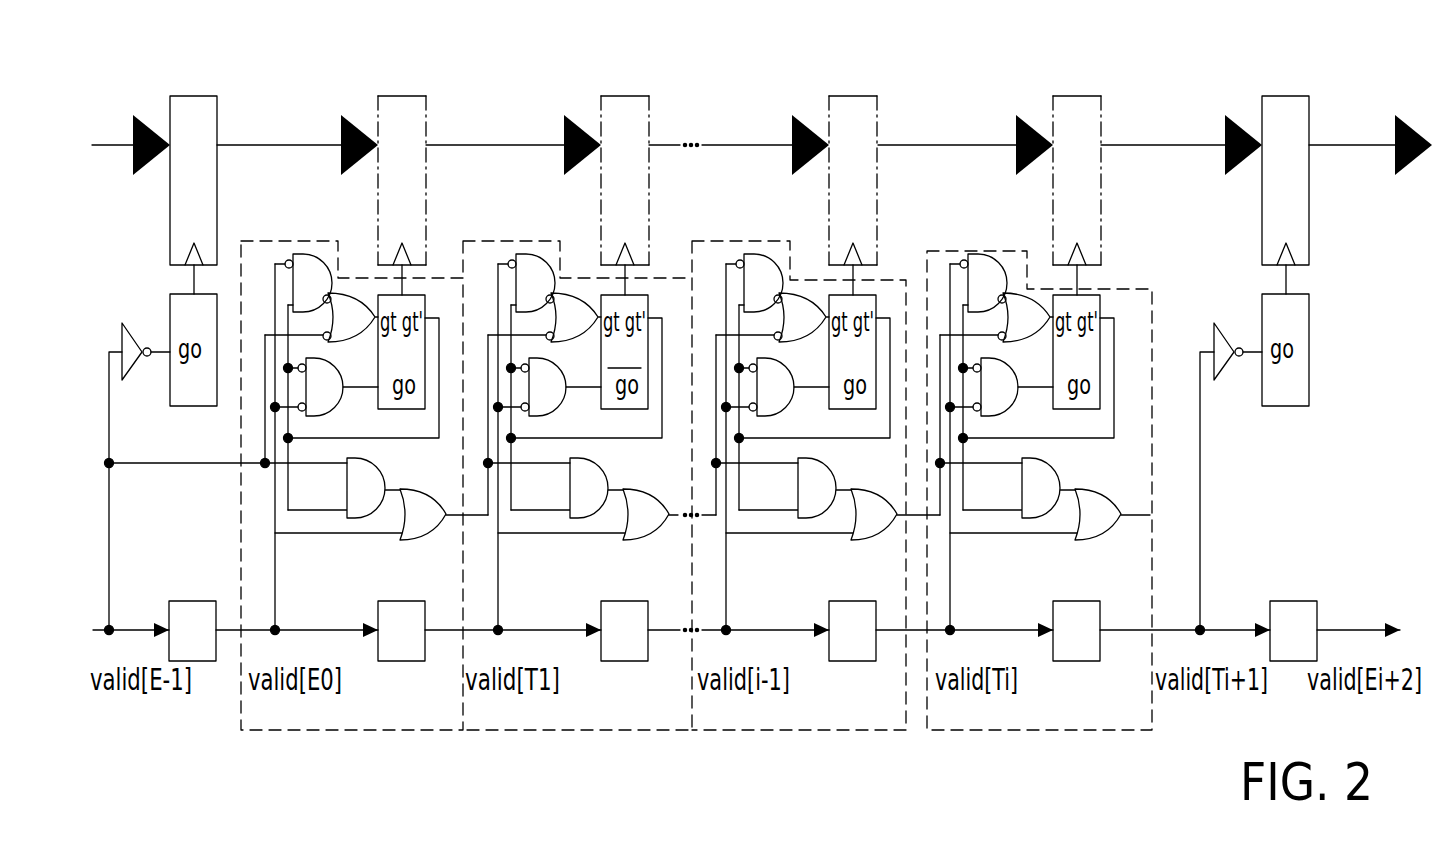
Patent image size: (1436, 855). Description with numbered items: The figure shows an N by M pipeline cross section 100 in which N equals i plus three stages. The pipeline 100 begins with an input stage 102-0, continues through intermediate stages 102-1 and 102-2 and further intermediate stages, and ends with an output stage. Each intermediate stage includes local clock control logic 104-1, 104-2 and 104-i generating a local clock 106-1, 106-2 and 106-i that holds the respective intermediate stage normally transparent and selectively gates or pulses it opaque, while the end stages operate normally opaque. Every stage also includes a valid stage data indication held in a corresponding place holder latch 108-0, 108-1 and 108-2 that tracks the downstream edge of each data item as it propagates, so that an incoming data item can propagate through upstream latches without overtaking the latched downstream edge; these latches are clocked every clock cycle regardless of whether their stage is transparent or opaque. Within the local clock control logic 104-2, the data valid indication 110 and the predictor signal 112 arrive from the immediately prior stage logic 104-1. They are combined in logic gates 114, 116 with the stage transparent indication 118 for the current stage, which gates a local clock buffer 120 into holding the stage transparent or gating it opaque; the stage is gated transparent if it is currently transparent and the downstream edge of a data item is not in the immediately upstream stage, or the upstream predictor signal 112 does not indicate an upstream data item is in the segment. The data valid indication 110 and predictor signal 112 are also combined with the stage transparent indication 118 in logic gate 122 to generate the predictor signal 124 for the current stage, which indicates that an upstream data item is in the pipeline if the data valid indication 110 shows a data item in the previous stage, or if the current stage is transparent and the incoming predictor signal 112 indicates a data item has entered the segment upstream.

The pipeline cross section 100 is at (150, 762).
The input stage 102-0 is at (187, 95).
The intermediate stage 102-1 is at (393, 95).
The intermediate stage 102-2 is at (616, 95).
The local clock control logic 104-1 is at (332, 730).
The local clock control logic 104-2 is at (557, 730).
The local clock control logic 104-i is at (812, 734).
The local clock 106-1 is at (402, 276).
The local clock 106-2 is at (625, 276).
The local clock 106-i is at (853, 276).
The place holder latch 108-0 is at (192, 600).
The place holder latch 108-1 is at (396, 600).
The place holder latch 108-2 is at (622, 600).
The data valid indication 110 is at (498, 582).
The predictor signal 112 is at (453, 507).
The logic gate 114 is at (542, 417).
The logic gate 116 is at (555, 252).
The stage transparent indication 118 is at (650, 436).
The local clock buffer 120 is at (624, 355).
The logic gate 122 is at (660, 533).
The predictor signal 124 is at (670, 512).